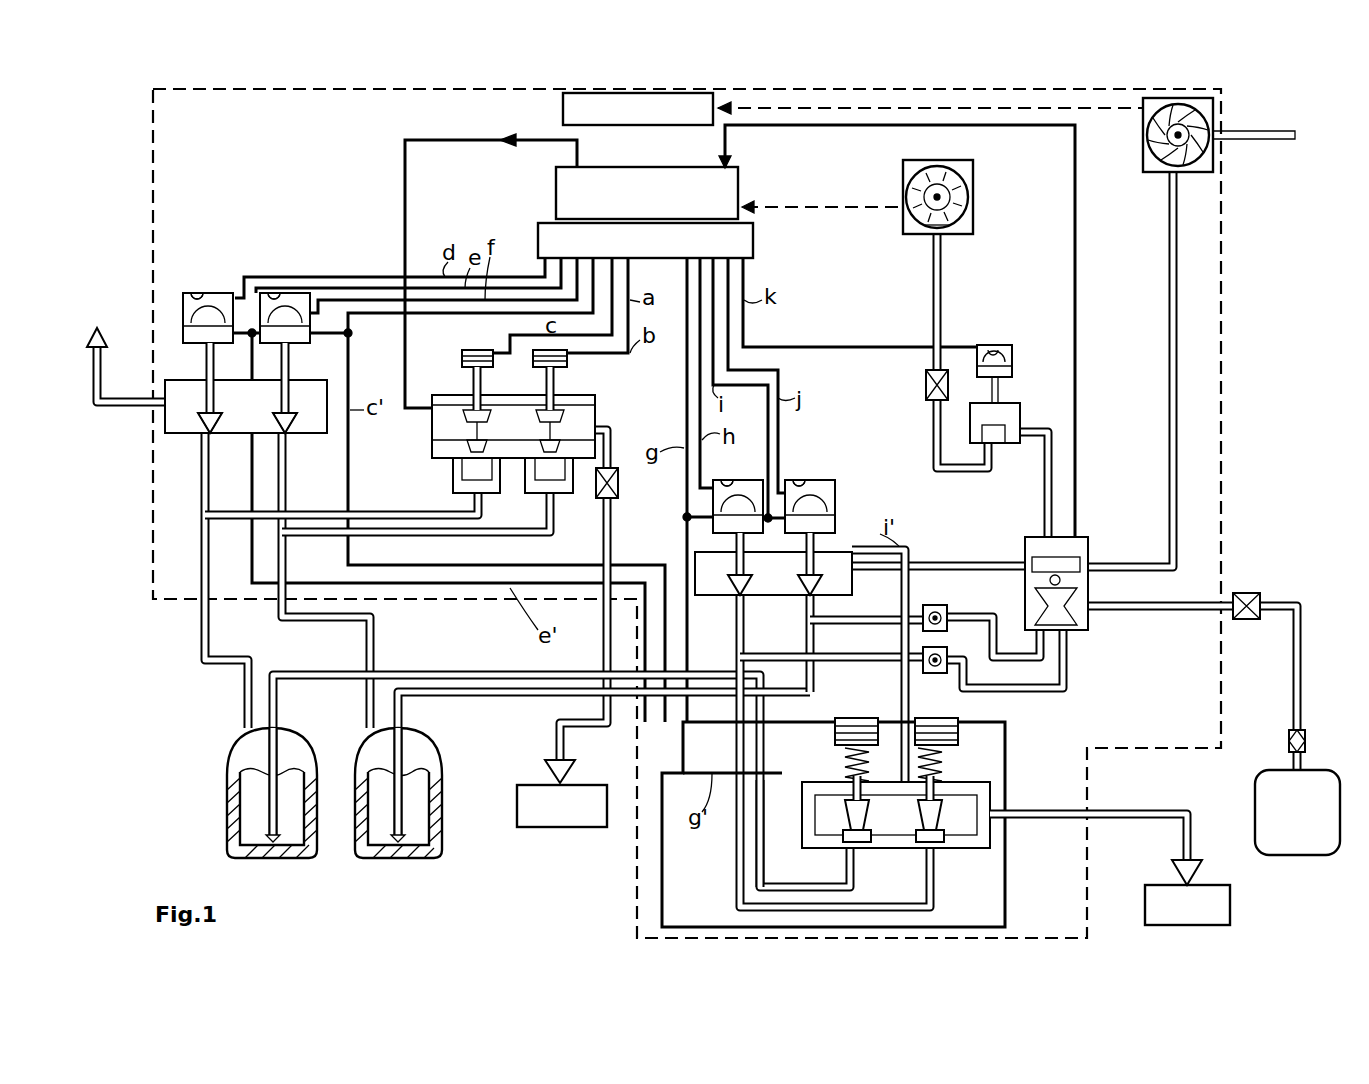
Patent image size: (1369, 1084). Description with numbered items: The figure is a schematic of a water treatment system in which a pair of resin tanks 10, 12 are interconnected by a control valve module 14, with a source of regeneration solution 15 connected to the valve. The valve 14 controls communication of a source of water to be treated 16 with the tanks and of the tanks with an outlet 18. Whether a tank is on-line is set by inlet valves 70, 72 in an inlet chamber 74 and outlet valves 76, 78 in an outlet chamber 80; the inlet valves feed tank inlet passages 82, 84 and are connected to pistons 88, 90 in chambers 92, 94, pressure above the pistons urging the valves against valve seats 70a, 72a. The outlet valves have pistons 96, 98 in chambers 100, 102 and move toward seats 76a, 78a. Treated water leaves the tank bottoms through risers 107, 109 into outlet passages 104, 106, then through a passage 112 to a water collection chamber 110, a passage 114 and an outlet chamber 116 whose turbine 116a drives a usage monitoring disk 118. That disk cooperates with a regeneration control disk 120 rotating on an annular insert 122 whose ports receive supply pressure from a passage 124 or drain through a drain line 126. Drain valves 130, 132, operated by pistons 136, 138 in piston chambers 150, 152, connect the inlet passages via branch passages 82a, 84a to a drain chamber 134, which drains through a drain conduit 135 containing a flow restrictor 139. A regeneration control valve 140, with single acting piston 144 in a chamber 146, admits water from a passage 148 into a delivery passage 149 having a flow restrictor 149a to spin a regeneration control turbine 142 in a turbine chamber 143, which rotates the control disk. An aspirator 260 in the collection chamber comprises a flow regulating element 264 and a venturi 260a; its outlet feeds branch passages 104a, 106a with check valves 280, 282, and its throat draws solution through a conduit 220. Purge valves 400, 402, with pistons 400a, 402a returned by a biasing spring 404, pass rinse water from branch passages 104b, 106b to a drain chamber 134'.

The resin tank 10 is at (285, 730).
The resin tank 12 is at (415, 732).
The control valve module 14 is at (1221, 282).
The source of regeneration solution 15 is at (1338, 776).
The source of water to be treated 16 is at (99, 320).
The outlet 18 is at (1270, 130).
The inlet valve 70 is at (185, 365).
The valve seat 70a is at (205, 438).
The inlet valve 72 is at (280, 375).
The valve seat 72a is at (287, 440).
The inlet chamber 74 is at (296, 430).
The outlet valve 76 is at (735, 562).
The valve seat 76a is at (741, 600).
The outlet valve 78 is at (814, 588).
The valve seat 78a is at (814, 596).
The outlet chamber 80 is at (712, 612).
The tank inlet passage 82 is at (201, 640).
The branch passage 82a is at (345, 515).
The tank inlet passage 84 is at (330, 622).
The branch passage 84a is at (540, 537).
The piston 88 is at (215, 300).
The piston 90 is at (285, 300).
The chamber 92 is at (195, 300).
The chamber 94 is at (270, 300).
The piston 96 is at (750, 480).
The piston 98 is at (820, 494).
The chamber 100 is at (740, 492).
The chamber 102 is at (810, 486).
The tank outlet passage 104 is at (440, 675).
The branch passage 104a is at (815, 680).
The branch outlet passage 104b is at (755, 877).
The tank outlet passage 106 is at (530, 697).
The branch passage 106a is at (838, 626).
The branch conduit 106b is at (925, 887).
The riser 107 is at (268, 830).
The riser 109 is at (400, 835).
The water collection chamber 110 is at (1090, 541).
The passage 112 is at (962, 566).
The passage 114 is at (1180, 325).
The outlet chamber 116 is at (1220, 94).
The rotatable turbine 116a is at (1160, 172).
The usage monitoring disk 118 is at (563, 104).
The regeneration control disk 120 is at (738, 186).
The annular insert 122 is at (753, 241).
The passage 124 is at (848, 126).
The drain line 126 is at (425, 140).
The drain valve 130 is at (440, 442).
The drain valve 132 is at (597, 430).
The drain chamber 134 is at (513, 478).
The drain chamber 134' is at (1016, 853).
The drain conduit 135 is at (640, 522).
The piston 136 is at (465, 368).
The piston 138 is at (555, 372).
The flow restrictor 139 is at (618, 485).
The regeneration control valve 140 is at (1000, 388).
The regeneration control turbine 142 is at (948, 192).
The turbine chamber 143 is at (906, 236).
The single acting piston 144 is at (1012, 363).
The chamber 146 is at (992, 347).
The passage 148 is at (1043, 492).
The delivery passage 149 is at (941, 290).
The flow restrictor 149a is at (926, 385).
The piston chamber 150 is at (475, 353).
The piston chamber 152 is at (555, 360).
The conduit 220 is at (1298, 634).
The regeneration fluid aspirator 260 is at (1050, 614).
The venturi 260a is at (1064, 662).
The fluid flow regulating element 264 is at (1061, 581).
The check valve 280 is at (938, 673).
The check valve 282 is at (941, 605).
The purge valve 400 is at (822, 762).
The purge valve piston 400a is at (835, 738).
The purge valve 402 is at (972, 760).
The purge valve piston 402a is at (960, 735).
The biasing spring 404 is at (960, 774).